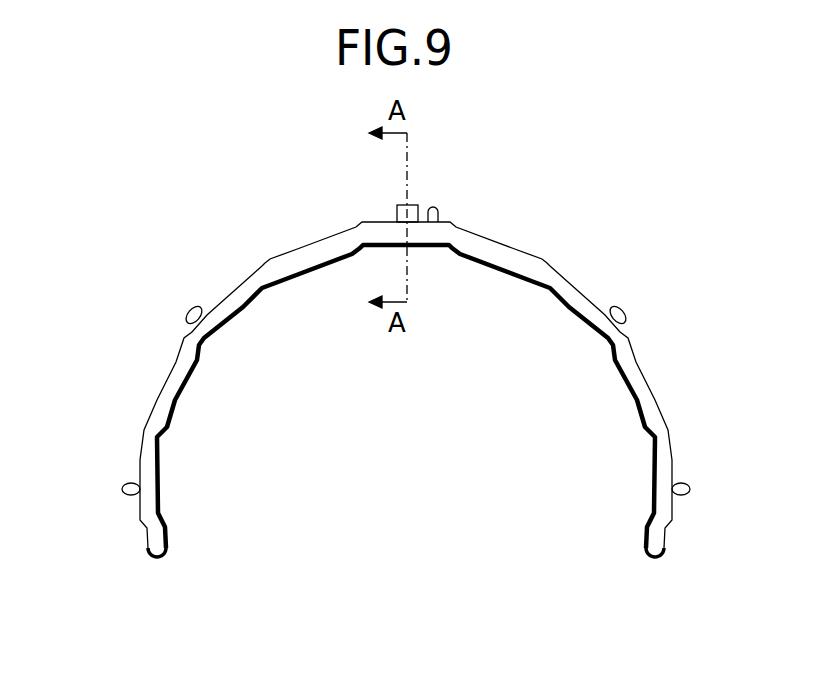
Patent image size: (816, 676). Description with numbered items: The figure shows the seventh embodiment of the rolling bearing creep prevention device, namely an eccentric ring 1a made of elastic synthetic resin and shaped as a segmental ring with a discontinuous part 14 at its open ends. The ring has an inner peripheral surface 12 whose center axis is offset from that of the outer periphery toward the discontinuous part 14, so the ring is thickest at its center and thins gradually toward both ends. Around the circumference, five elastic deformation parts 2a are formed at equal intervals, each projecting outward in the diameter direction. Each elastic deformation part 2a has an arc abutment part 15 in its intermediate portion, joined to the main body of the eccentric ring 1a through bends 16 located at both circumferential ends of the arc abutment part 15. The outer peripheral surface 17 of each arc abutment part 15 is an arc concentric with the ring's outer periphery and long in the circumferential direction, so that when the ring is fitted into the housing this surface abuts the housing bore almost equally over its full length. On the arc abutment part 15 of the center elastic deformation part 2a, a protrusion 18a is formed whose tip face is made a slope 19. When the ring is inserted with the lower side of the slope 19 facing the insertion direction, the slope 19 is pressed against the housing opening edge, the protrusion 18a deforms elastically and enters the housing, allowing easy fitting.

The eccentric ring 1a is at (496, 262).
The elastic deformation part 2a is at (243, 280).
The inner peripheral surface 12 is at (297, 284).
The discontinuous part 14 is at (182, 567).
The arc abutment part 15 is at (372, 224).
The bend 16 is at (270, 255).
The outer peripheral surface of the arc abutment part 17 is at (435, 224).
The protrusion 18a is at (407, 205).
The slope 19 is at (420, 207).